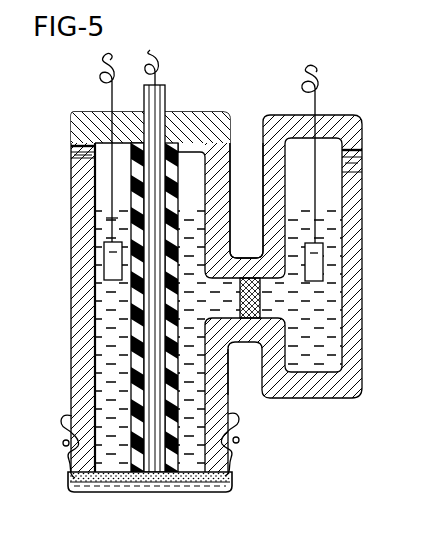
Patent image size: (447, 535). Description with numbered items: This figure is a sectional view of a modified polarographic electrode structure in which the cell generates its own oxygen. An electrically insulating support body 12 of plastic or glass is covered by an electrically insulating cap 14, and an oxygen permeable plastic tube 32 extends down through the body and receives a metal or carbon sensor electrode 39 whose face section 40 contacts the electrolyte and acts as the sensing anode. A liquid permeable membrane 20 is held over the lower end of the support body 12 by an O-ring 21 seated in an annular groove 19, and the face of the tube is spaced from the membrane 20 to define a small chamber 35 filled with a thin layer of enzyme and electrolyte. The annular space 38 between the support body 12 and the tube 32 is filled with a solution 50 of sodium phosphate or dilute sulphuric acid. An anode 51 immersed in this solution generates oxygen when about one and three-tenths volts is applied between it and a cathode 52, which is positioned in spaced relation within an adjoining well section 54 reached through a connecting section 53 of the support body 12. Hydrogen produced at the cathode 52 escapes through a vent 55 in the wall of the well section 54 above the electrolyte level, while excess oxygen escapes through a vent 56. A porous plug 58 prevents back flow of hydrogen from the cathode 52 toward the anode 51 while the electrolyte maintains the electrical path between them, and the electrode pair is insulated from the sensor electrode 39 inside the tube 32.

The support body 12 is at (78, 193).
The cap 14 is at (78, 119).
The annular groove 19 is at (70, 456).
The membrane 20 is at (207, 488).
The O-ring 21 is at (238, 442).
The oxygen permeable plastic tube 32 is at (176, 148).
The chamber 35 is at (113, 484).
The annular space 38 is at (228, 148).
The electrode 39 is at (167, 90).
The face section 40 is at (243, 4).
The solution 50 is at (112, 341).
The anode 51 is at (108, 256).
The cathode 52 is at (316, 257).
The connecting section 53 is at (245, 343).
The well section 54 is at (356, 305).
The vent 55 is at (356, 161).
The vent 56 is at (73, 160).
The porous plug 58 is at (253, 282).